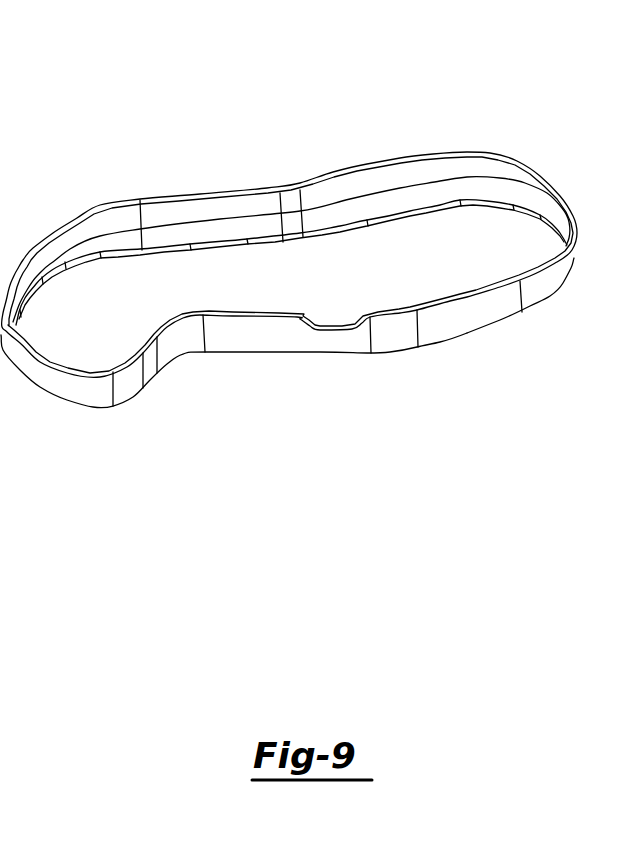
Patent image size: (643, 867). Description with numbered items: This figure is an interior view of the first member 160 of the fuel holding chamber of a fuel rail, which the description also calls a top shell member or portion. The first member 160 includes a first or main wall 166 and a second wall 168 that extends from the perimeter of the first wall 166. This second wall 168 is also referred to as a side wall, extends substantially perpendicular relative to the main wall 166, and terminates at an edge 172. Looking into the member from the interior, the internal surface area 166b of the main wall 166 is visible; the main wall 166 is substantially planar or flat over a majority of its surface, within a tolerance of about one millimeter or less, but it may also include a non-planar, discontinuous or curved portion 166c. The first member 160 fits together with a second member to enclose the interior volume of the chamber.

The first member 160 is at (352, 377).
The first wall 166 is at (491, 199).
The internal surface area 166b is at (418, 252).
The curved portion 166c is at (572, 263).
The second wall 168 is at (438, 327).
The edge 172 is at (160, 197).